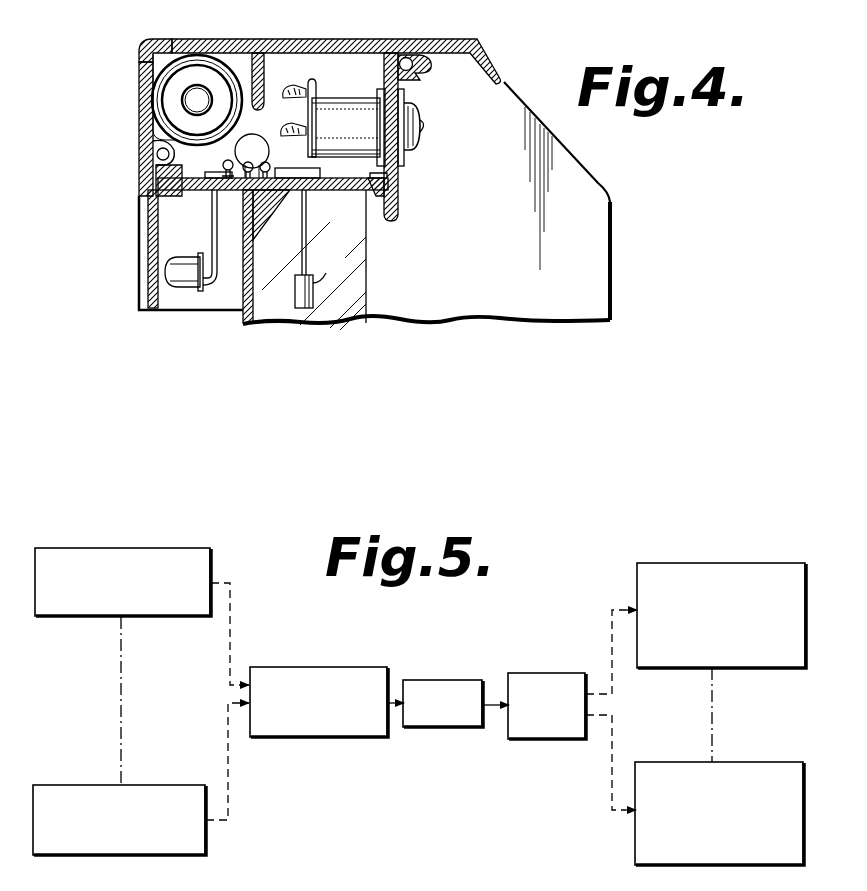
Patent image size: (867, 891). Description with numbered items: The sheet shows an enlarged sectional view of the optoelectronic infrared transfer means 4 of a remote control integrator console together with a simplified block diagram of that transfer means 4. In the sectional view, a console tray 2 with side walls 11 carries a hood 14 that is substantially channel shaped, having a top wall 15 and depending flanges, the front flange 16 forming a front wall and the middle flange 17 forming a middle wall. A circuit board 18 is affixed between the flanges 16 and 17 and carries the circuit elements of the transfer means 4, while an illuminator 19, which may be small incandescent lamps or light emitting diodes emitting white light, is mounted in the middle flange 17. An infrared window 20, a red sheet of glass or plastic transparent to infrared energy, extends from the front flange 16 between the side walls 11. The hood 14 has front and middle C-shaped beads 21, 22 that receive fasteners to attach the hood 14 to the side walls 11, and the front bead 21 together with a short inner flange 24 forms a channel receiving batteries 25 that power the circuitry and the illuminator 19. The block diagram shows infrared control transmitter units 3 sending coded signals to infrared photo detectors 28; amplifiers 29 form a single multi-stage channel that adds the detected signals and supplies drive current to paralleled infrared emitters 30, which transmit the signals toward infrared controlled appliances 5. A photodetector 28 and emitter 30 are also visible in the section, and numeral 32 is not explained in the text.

In FIG. 4, the console tray 2 is at (591, 166).
In FIG. 4, the side walls 11 is at (600, 252).
In FIG. 4, the hood 14 is at (178, 38).
In FIG. 4, the top wall 15 is at (342, 42).
In FIG. 4, the front flange 16 is at (140, 103).
In FIG. 4, the middle flange 17 is at (397, 179).
In FIG. 4, the circuit board 18 is at (340, 196).
In FIG. 4, the illuminator 19 is at (411, 150).
In FIG. 4, the infrared window 20 is at (148, 240).
In FIG. 4, the front C-shaped bead 21 is at (154, 158).
In FIG. 4, the middle C-shaped bead 22 is at (429, 66).
In FIG. 4, the short inner flange 24 is at (265, 72).
In FIG. 4, the batteries 25 is at (206, 56).
In FIG. 4, the infrared photo detectors 28 is at (314, 281).
In FIG. 5, the infrared photo detectors 28 is at (385, 670).
In FIG. 5, the amplifiers 29 is at (403, 728).
In FIG. 4, the infrared emitters 30 is at (180, 287).
In FIG. 5, the infrared emitters 30 is at (586, 673).
In FIG. 4, the window 32 is at (279, 318).
In FIG. 4, the infrared transfer means 4 is at (239, 325).
In FIG. 5, the infrared transfer means 4 is at (314, 765).
In FIG. 5, the infrared control transmitter units 3 is at (35, 549).
In FIG. 5, the infrared controlled appliances 5 is at (637, 563).